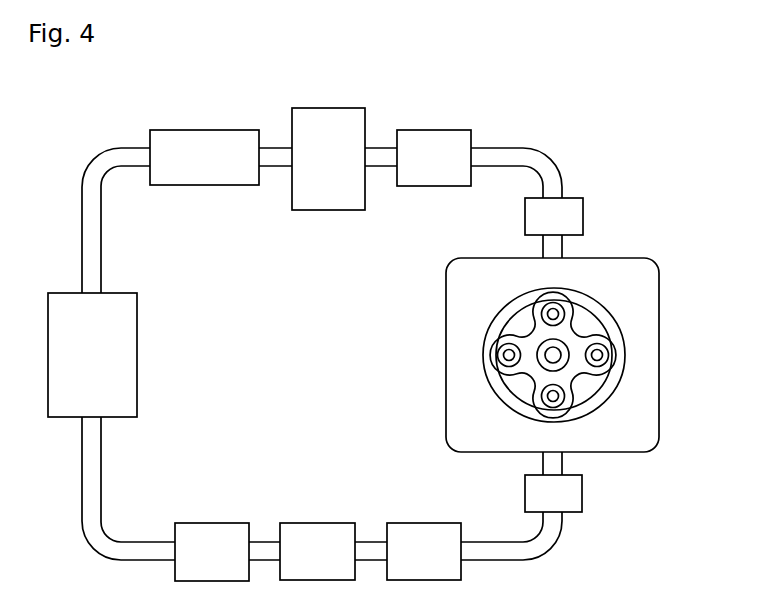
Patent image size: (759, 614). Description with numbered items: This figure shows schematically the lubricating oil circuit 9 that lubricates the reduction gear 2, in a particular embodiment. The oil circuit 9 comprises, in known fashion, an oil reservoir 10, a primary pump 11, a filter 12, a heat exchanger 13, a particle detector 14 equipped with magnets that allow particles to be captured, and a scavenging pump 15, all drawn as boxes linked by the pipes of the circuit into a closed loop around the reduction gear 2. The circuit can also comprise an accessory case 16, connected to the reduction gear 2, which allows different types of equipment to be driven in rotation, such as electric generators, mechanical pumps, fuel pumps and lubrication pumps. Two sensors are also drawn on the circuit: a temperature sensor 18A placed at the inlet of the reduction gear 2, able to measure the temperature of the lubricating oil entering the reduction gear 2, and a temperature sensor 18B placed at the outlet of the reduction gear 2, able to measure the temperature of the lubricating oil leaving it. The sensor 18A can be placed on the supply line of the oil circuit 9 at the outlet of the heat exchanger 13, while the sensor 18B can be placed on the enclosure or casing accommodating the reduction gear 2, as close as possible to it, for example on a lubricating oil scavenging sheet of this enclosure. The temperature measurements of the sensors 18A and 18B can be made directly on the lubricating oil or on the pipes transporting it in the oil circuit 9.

The oil circuit 9 is at (661, 199).
The reduction gear 2 is at (617, 295).
The oil reservoir 10 is at (80, 360).
The primary pump 11 is at (193, 170).
The filter 12 is at (316, 170).
The heat exchanger 13 is at (423, 170).
The particle detector 14 is at (306, 561).
The scavenging pump 15 is at (200, 561).
The accessory case 16 is at (413, 561).
The temperature sensor 18A is at (536, 228).
The temperature sensor 18B is at (535, 503).